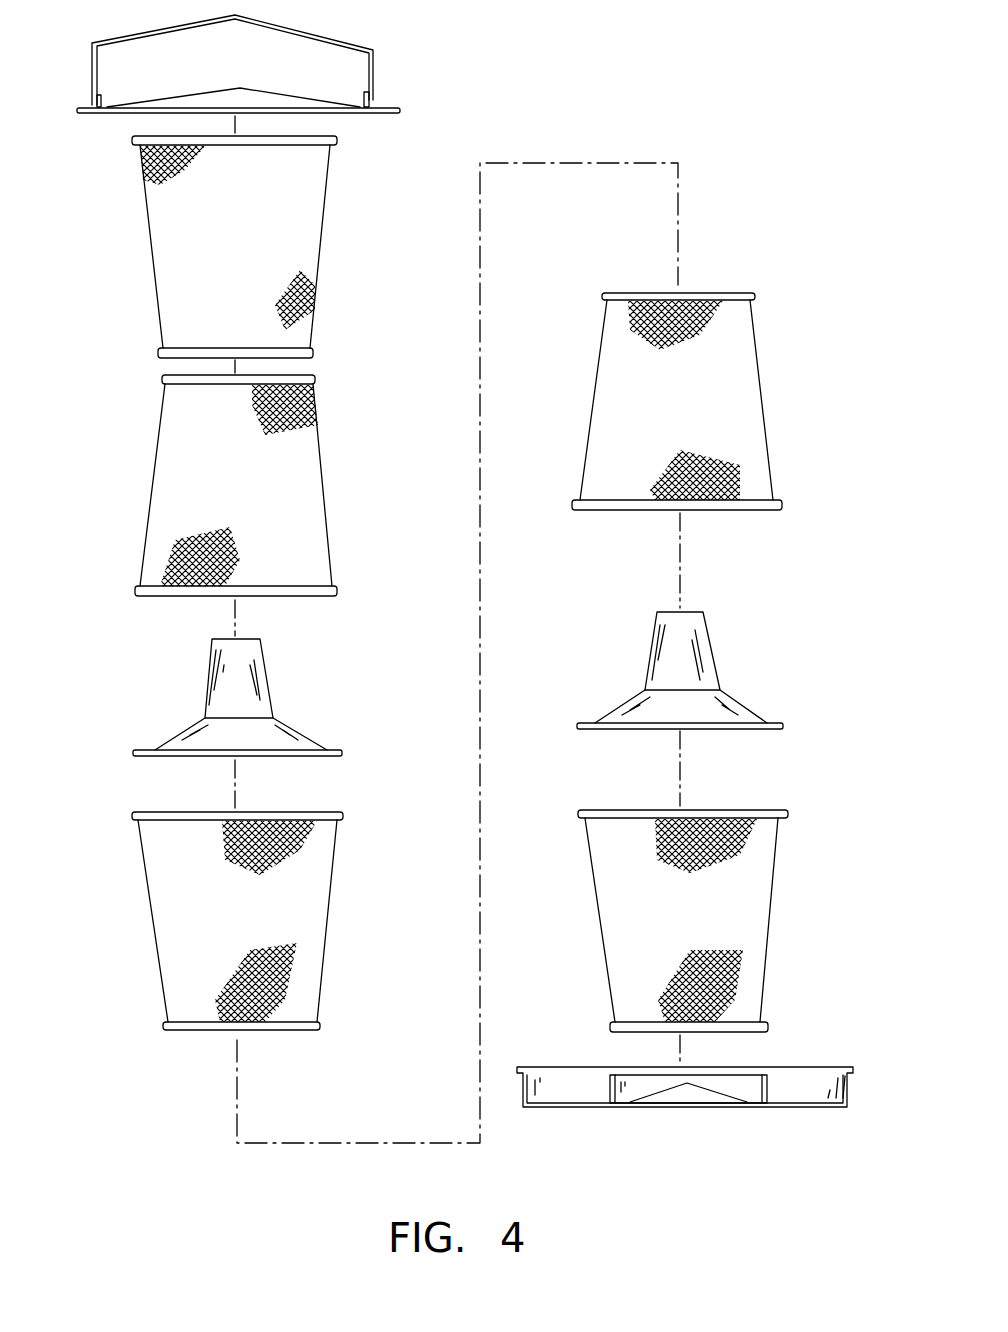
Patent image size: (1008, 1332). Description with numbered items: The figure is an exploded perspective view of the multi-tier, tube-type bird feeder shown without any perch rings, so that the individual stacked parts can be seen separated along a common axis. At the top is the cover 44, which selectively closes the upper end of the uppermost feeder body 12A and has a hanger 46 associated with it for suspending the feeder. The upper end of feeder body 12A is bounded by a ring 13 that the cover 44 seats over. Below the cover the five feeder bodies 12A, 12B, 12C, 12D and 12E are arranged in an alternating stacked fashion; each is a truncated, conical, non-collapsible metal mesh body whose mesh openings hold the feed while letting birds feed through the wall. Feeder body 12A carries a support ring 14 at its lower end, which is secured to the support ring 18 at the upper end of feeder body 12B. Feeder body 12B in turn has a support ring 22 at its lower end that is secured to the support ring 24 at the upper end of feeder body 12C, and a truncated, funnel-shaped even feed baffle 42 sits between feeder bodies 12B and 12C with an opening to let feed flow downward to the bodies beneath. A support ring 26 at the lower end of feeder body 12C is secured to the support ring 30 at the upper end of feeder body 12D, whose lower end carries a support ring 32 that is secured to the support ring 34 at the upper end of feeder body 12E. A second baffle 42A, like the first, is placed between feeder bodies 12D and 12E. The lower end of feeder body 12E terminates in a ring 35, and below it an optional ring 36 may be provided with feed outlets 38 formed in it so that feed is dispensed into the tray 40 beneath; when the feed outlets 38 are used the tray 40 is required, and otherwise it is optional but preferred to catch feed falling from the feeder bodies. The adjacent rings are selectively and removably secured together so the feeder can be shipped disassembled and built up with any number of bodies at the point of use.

The hanger 46 is at (273, 22).
The cover 44 is at (258, 103).
The upper rim of first cup 13 is at (332, 141).
The feeder body 12A is at (148, 225).
The support ring 14 is at (316, 352).
The support ring 18 is at (162, 379).
The feeder body 12B is at (156, 440).
The support ring 22 is at (137, 591).
The even feed baffle 42 is at (290, 671).
The support ring 24 is at (130, 815).
The feeder body 12C is at (150, 895).
The support ring 26 is at (165, 1026).
The support ring 30 is at (735, 292).
The feeder body 12D is at (762, 390).
The support ring 32 is at (785, 505).
The baffle 42A is at (700, 655).
The support ring 34 is at (578, 811).
The feeder body 12E is at (625, 912).
The lower rim of fifth cup 35 is at (768, 1022).
The tray 40 is at (590, 1106).
The feed outlets 38 is at (672, 1095).
The ring 36 is at (770, 1088).